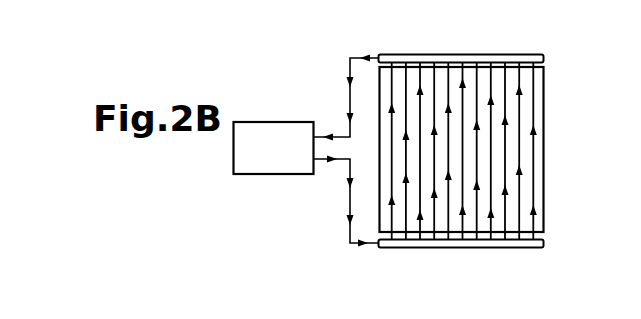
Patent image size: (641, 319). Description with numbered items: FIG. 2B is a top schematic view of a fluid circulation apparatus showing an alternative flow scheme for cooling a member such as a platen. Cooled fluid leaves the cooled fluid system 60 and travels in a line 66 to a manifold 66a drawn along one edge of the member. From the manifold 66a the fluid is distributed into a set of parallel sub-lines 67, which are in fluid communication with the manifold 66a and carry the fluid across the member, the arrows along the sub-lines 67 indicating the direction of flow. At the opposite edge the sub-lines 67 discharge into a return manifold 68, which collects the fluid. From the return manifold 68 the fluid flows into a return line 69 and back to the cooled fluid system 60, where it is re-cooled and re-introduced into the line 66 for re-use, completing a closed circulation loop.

The cooled fluid system 60 is at (270, 162).
The line 66 is at (350, 205).
The manifold 66a is at (393, 250).
The sub-lines 67 is at (535, 103).
The return manifold 68 is at (393, 57).
The return line 69 is at (350, 98).